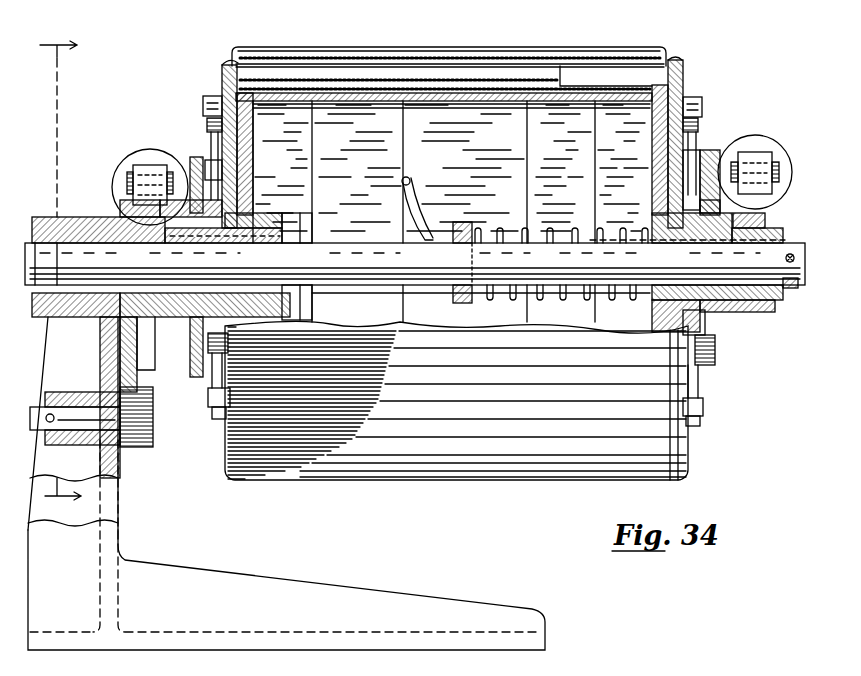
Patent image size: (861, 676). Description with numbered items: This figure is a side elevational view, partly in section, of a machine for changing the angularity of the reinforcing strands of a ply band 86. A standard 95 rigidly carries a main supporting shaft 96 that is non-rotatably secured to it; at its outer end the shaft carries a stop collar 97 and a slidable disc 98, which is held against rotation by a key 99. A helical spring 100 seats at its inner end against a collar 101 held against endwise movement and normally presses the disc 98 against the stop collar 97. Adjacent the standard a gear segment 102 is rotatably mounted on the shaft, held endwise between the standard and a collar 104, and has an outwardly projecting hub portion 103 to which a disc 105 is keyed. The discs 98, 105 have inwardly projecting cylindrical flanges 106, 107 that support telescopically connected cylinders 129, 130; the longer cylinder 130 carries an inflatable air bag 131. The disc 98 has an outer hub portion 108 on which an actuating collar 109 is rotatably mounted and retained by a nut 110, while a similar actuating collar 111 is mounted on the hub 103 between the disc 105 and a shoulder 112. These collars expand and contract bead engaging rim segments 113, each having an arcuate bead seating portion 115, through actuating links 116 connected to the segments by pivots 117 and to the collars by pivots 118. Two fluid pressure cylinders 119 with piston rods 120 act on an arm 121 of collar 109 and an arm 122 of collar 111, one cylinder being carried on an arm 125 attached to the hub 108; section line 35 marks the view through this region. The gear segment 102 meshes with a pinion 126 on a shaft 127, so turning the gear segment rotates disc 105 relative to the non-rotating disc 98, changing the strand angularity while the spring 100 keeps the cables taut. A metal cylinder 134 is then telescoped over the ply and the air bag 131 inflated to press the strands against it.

The section line 35- 35 is at (59, 272).
The ply band 86 is at (410, 47).
The standard 95 is at (118, 516).
The main supporting shaft 96 is at (80, 222).
The stop collar 97 is at (793, 290).
The slidable disc 98 is at (650, 150).
The key 99 is at (575, 285).
The helical spring 100 is at (552, 228).
The collar 101 is at (457, 222).
The gear segment 102 is at (155, 378).
The hub portion 103 is at (190, 262).
The collar 104 is at (306, 218).
The disc 105 is at (252, 146).
The cylindrical flange 106 is at (596, 108).
The cylindrical flange 107 is at (385, 104).
The hub portion 108 is at (685, 243).
The actuating collar 109 is at (710, 150).
The nut 110 is at (768, 222).
The actuating collar 111 is at (190, 318).
The shoulder 112 is at (175, 243).
The bead engaging rim segments 113 is at (684, 68).
The arcuate bead seating portion 115 is at (682, 62).
The actuating link 116 is at (705, 370).
The pivot 117 is at (703, 402).
The pivot 118 is at (660, 190).
The fluid pressure cylinder 119 is at (745, 140).
The piston rod 120 is at (758, 155).
The arm 121 is at (776, 170).
The arm 122 is at (135, 200).
The arm 125 is at (748, 305).
The pinion 126 is at (155, 428).
The shaft 127 is at (78, 412).
The cylinder 129 is at (532, 98).
The cylinder 130 is at (328, 168).
The inflatable air bag 131 is at (448, 98).
The metal cylinder 134 is at (578, 70).